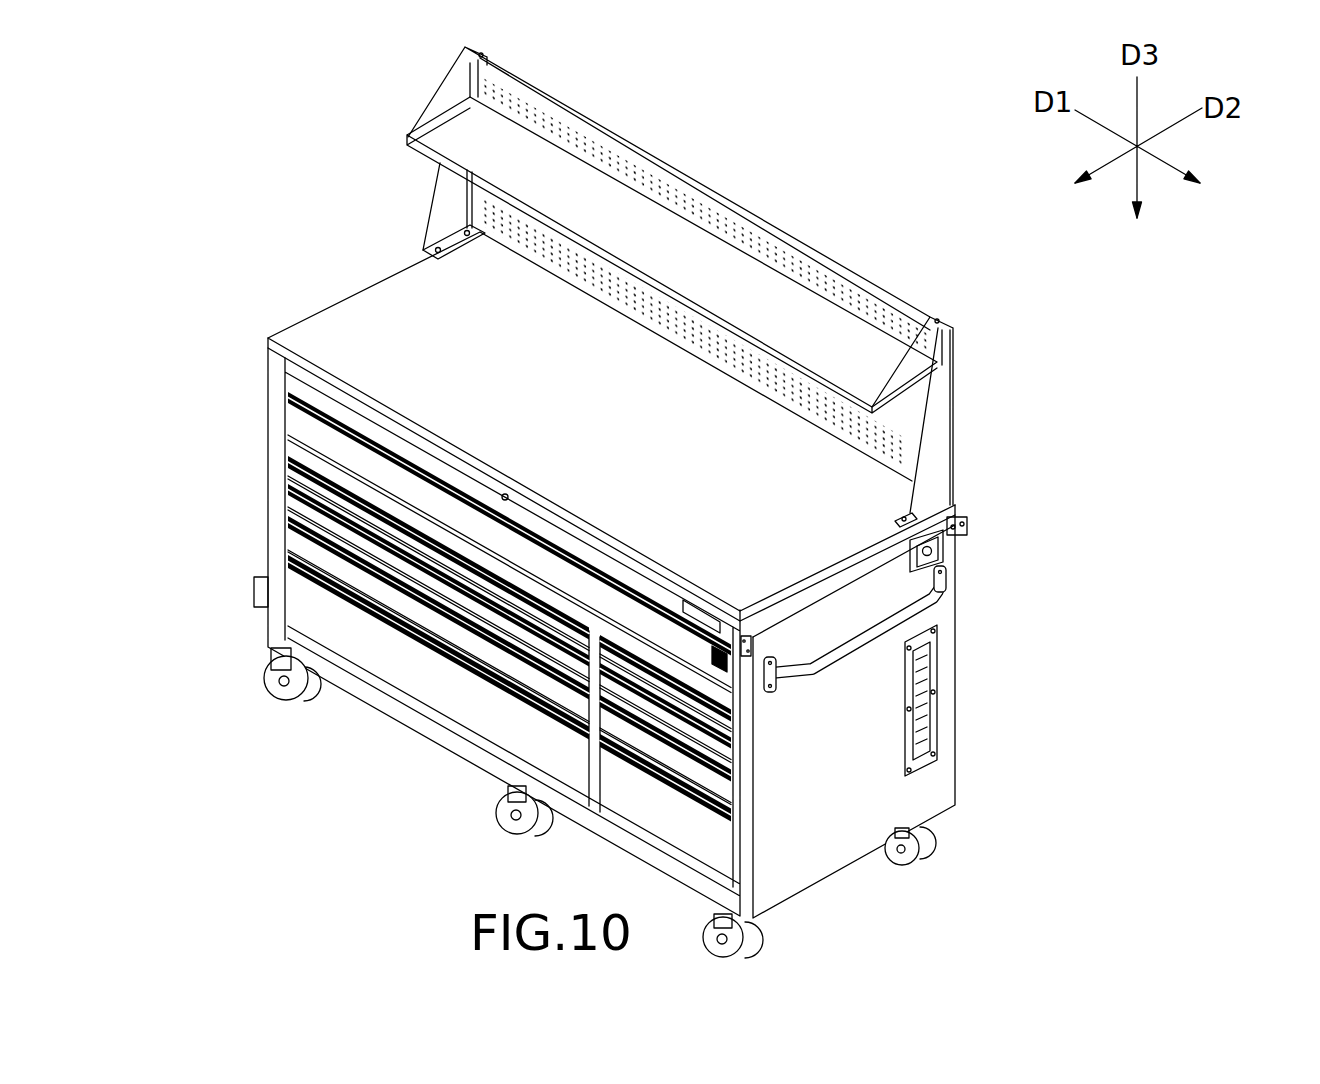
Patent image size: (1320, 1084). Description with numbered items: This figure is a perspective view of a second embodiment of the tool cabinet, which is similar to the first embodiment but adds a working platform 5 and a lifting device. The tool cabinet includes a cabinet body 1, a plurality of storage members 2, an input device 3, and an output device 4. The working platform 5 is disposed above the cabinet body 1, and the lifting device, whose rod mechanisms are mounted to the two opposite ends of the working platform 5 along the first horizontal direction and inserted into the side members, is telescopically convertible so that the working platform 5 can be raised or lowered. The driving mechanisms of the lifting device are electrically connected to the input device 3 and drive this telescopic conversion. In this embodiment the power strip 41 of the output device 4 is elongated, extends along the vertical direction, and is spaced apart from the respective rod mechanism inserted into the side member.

The cabinet body 1 is at (611, 502).
The storage members 2 is at (305, 600).
The input device 3 is at (947, 546).
The output device 4 is at (934, 661).
The power strip 41 is at (923, 733).
The working platform 5 is at (343, 297).